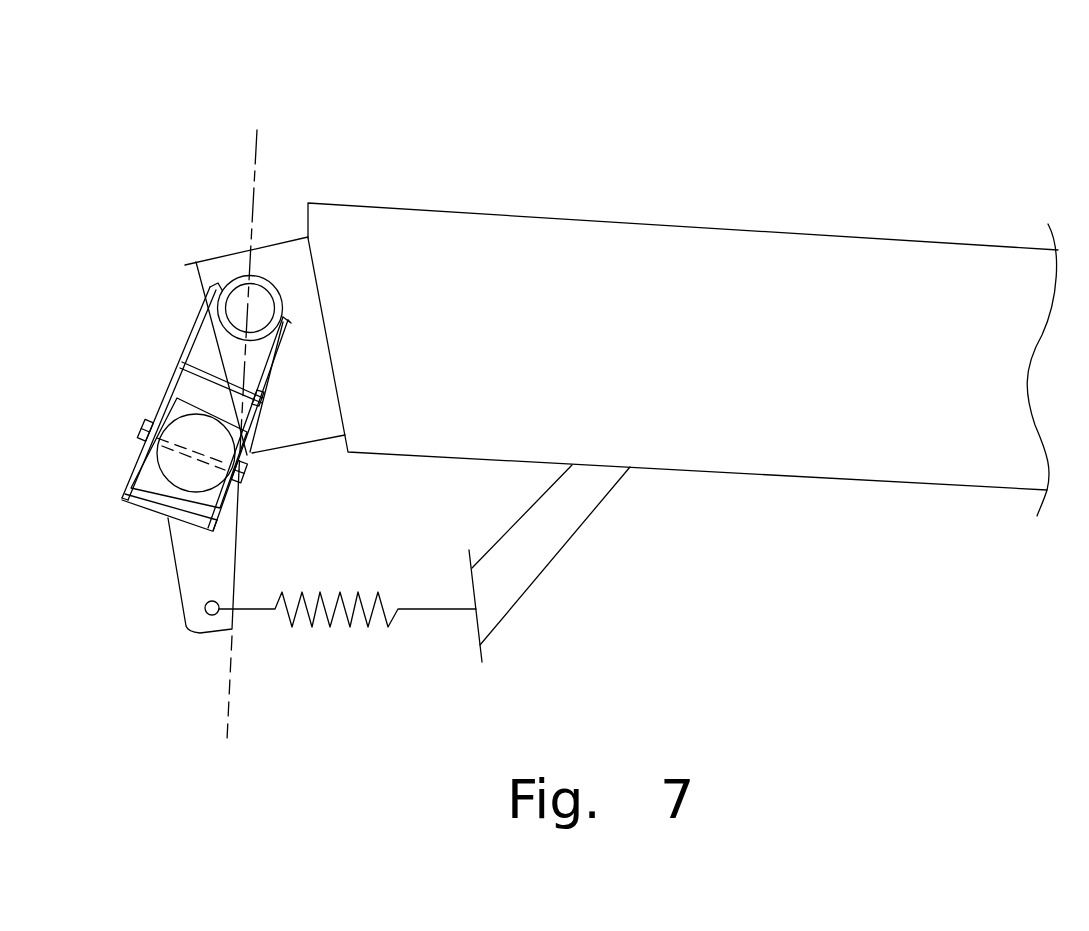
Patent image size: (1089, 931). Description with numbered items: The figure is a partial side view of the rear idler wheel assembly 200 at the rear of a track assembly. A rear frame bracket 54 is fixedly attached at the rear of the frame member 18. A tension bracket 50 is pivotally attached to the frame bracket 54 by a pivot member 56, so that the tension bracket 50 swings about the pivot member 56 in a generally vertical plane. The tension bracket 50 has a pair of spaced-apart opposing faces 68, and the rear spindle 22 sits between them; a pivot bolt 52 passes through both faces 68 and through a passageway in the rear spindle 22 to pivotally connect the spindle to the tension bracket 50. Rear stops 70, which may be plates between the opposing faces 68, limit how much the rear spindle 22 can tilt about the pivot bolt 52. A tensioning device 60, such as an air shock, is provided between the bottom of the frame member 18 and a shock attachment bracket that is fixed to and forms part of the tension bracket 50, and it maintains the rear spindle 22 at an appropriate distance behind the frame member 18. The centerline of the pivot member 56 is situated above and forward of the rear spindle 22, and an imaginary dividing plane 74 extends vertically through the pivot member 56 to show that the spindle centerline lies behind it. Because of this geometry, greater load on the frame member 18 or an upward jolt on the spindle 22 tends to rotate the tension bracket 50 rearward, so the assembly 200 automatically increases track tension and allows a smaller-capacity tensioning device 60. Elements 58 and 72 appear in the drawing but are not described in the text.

The rear idler wheel assembly 200 is at (166, 134).
The frame member 18 is at (768, 359).
The rear spindle 22 is at (158, 466).
The tension bracket 50 is at (186, 352).
The pivot bolt 52 is at (235, 478).
The rear frame bracket 54 is at (232, 260).
The pivot member 56 is at (232, 310).
The stop 58 is at (553, 548).
The tensioning device 60 is at (368, 628).
The opposing faces 68 is at (137, 447).
The rear stops 70 is at (203, 375).
The lever arm 72 is at (182, 568).
The imaginary dividing plane 74 is at (222, 692).